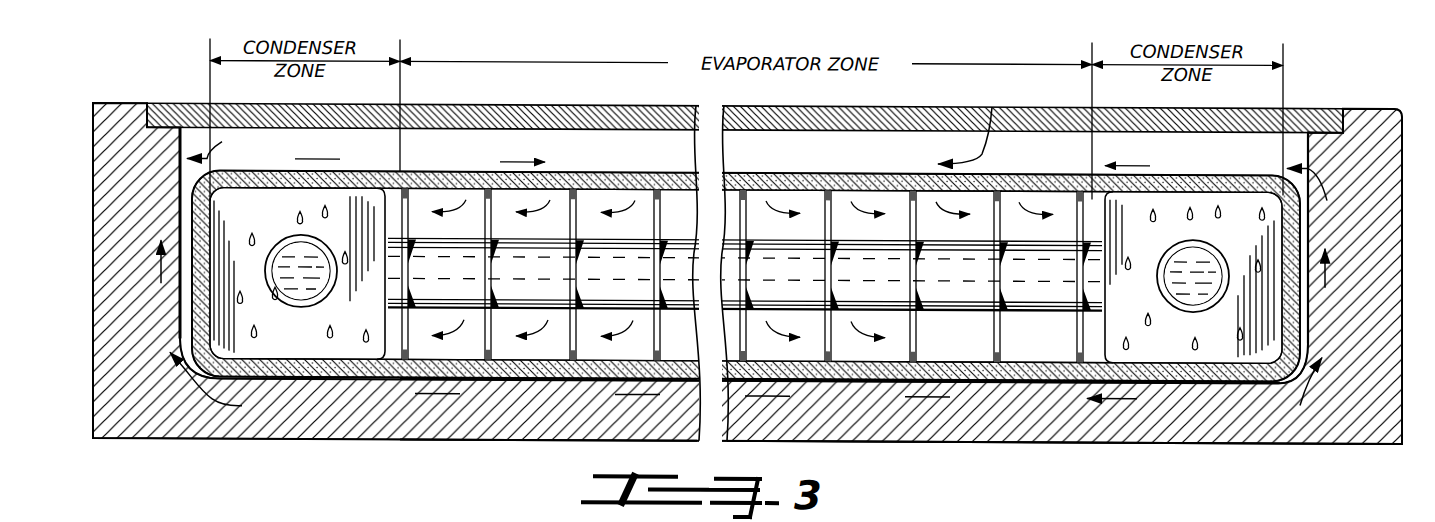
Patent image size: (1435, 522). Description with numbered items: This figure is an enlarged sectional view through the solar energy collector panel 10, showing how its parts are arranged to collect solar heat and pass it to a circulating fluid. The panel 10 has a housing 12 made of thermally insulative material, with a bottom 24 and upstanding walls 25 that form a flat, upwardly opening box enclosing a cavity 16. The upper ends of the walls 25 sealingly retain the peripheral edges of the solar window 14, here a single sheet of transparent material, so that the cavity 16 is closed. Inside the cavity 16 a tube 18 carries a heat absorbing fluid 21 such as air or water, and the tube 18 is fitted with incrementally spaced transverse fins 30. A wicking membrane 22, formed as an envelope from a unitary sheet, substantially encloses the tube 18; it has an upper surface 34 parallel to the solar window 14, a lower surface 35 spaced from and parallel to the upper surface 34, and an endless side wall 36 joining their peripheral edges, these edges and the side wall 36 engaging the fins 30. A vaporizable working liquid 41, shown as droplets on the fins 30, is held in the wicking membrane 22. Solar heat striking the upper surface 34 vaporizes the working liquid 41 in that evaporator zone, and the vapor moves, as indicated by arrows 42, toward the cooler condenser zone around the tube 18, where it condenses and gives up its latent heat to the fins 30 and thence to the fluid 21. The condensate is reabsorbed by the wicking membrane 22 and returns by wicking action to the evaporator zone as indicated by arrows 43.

The solar energy collector panel 10 is at (1005, 442).
The housing 12 is at (298, 428).
The solar window 14 is at (592, 103).
The cavity 16 is at (191, 130).
The tube 18 is at (338, 272).
The heat absorbing fluid 21 is at (301, 298).
The wicking membrane 22 is at (451, 172).
The bottom 24 is at (424, 439).
The upstanding walls 25 is at (93, 398).
The transverse fins 30 is at (255, 190).
The upper surface 34 is at (479, 180).
The lower surface 35 is at (540, 374).
The endless side wall 36 is at (212, 240).
The vaporizable working liquid 41 is at (312, 218).
The arrows 42 is at (528, 206).
The arrows 43 is at (1406, 263).